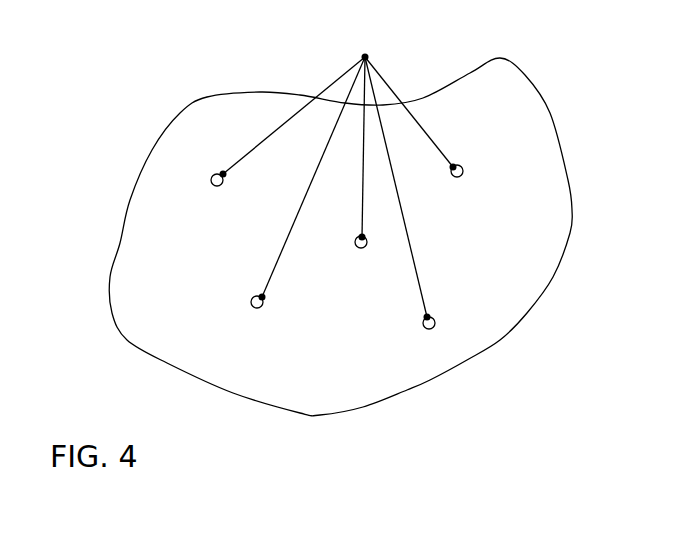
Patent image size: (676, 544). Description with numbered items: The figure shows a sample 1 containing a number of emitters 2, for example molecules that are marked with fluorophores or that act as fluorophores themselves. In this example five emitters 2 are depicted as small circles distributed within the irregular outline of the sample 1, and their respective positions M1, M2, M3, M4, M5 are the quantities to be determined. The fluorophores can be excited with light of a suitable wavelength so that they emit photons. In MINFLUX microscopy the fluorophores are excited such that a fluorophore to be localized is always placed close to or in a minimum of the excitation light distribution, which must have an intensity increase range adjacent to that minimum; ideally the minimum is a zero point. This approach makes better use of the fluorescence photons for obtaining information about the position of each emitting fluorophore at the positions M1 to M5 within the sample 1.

The sample 1 is at (152, 150).
The emitters 2 is at (338, 172).
The position of first emitter M1 is at (218, 200).
The position of second emitter M2 is at (268, 322).
The position of third emitter M3 is at (372, 262).
The position of fourth emitter M4 is at (419, 340).
The position of fifth emitter M5 is at (469, 192).